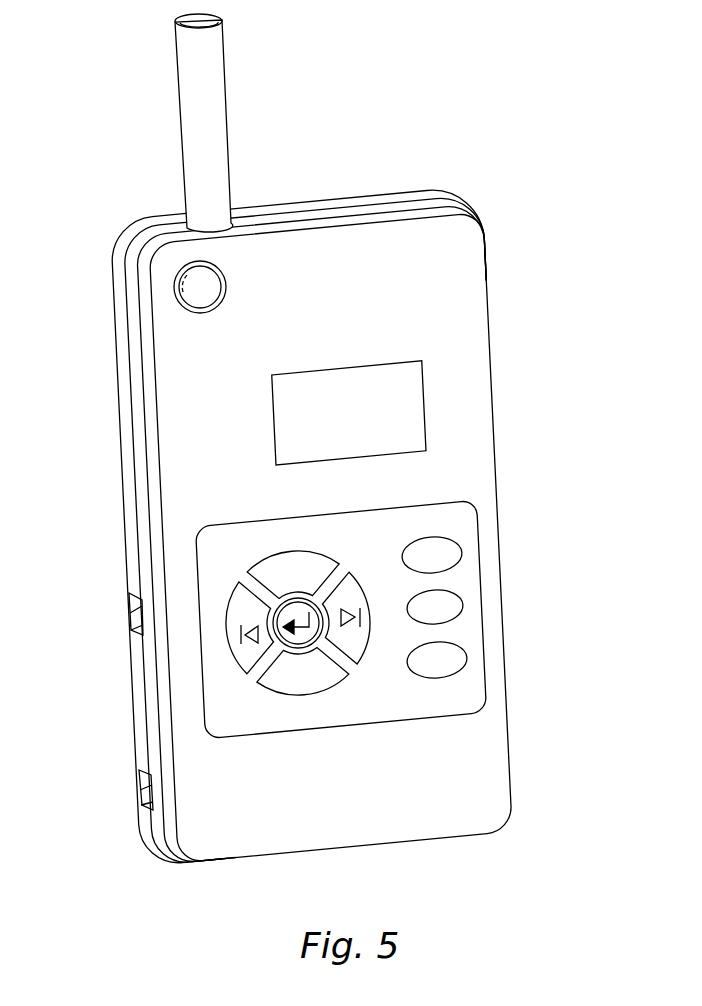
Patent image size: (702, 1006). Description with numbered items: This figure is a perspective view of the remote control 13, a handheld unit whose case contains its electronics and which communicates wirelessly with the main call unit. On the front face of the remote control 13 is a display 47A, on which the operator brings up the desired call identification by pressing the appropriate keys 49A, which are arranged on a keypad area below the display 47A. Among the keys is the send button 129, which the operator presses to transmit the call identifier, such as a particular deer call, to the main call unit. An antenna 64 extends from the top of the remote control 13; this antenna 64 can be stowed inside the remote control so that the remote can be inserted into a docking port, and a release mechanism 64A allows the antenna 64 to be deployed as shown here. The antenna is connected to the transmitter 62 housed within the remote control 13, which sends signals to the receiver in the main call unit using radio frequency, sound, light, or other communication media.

The remote control 13 is at (183, 465).
The display 47A is at (425, 400).
The keys 49A is at (420, 697).
The transmitter 62 is at (148, 790).
The antenna 64 is at (213, 100).
The release mechanism 64A is at (195, 294).
The send button 129 is at (463, 550).